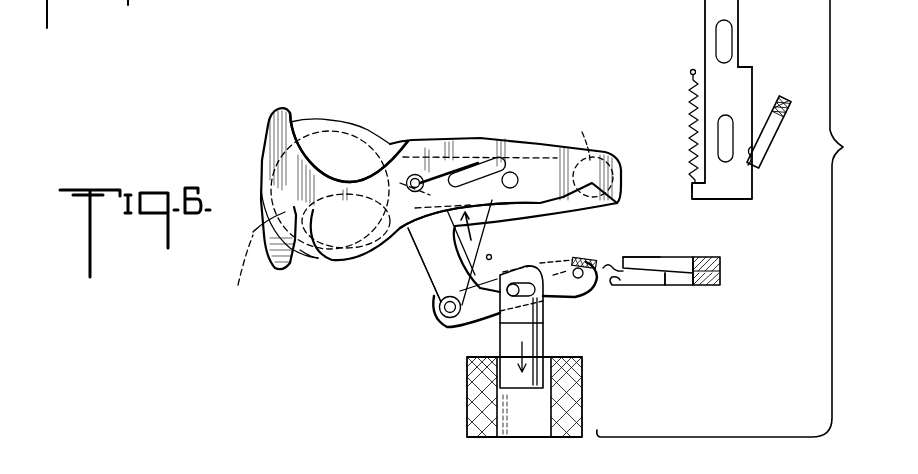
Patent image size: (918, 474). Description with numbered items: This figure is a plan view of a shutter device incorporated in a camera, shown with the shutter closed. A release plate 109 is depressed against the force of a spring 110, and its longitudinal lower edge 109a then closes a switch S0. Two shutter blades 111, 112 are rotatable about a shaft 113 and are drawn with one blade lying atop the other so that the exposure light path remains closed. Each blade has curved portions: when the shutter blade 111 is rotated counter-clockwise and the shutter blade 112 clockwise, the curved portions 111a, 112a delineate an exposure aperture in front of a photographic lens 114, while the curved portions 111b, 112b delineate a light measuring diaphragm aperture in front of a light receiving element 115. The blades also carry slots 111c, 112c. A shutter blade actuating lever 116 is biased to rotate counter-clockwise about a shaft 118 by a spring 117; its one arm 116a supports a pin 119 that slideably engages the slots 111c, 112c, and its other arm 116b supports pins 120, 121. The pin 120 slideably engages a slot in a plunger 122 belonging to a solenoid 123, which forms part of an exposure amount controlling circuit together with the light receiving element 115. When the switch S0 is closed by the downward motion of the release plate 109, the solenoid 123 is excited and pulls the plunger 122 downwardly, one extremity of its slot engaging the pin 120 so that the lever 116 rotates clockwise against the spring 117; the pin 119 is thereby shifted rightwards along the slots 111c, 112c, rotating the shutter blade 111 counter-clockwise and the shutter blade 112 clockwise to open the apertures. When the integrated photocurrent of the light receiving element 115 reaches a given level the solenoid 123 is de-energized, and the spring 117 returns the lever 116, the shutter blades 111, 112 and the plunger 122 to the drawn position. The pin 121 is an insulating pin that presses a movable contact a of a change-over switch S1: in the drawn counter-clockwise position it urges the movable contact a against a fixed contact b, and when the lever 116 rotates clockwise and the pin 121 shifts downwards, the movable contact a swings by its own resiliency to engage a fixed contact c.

The release plate 109 is at (684, 2).
The longitudinal lower edge 109a is at (738, 70).
The spring 110 is at (690, 93).
The switch So' S0 is at (781, 150).
The change over switch S1' S1 is at (696, 252).
The fixed contact b is at (645, 257).
The fixed contact c is at (647, 286).
The movable contact a is at (665, 286).
The shutter blade 111 is at (500, 142).
The curved portion 111a is at (327, 130).
The curved portion 111b is at (558, 211).
The slot 111c is at (463, 143).
The shutter blade 112 is at (540, 218).
The curved portion 112a is at (303, 258).
The curved portion 112b is at (583, 131).
The slot 112c is at (346, 221).
The shaft 113 is at (516, 174).
The photographic lens 114 is at (256, 258).
The light receiving element 115 is at (608, 160).
The shutter blade actuating lever 116 is at (440, 272).
The arm 116a is at (410, 246).
The arm 116b is at (546, 306).
The spring 117 is at (440, 312).
The shaft 118 is at (446, 326).
The pin 119 is at (416, 174).
The pin 120 is at (511, 285).
The insulating pin 121 is at (581, 280).
The plunger 122 is at (498, 333).
The solenoid 123 is at (465, 394).